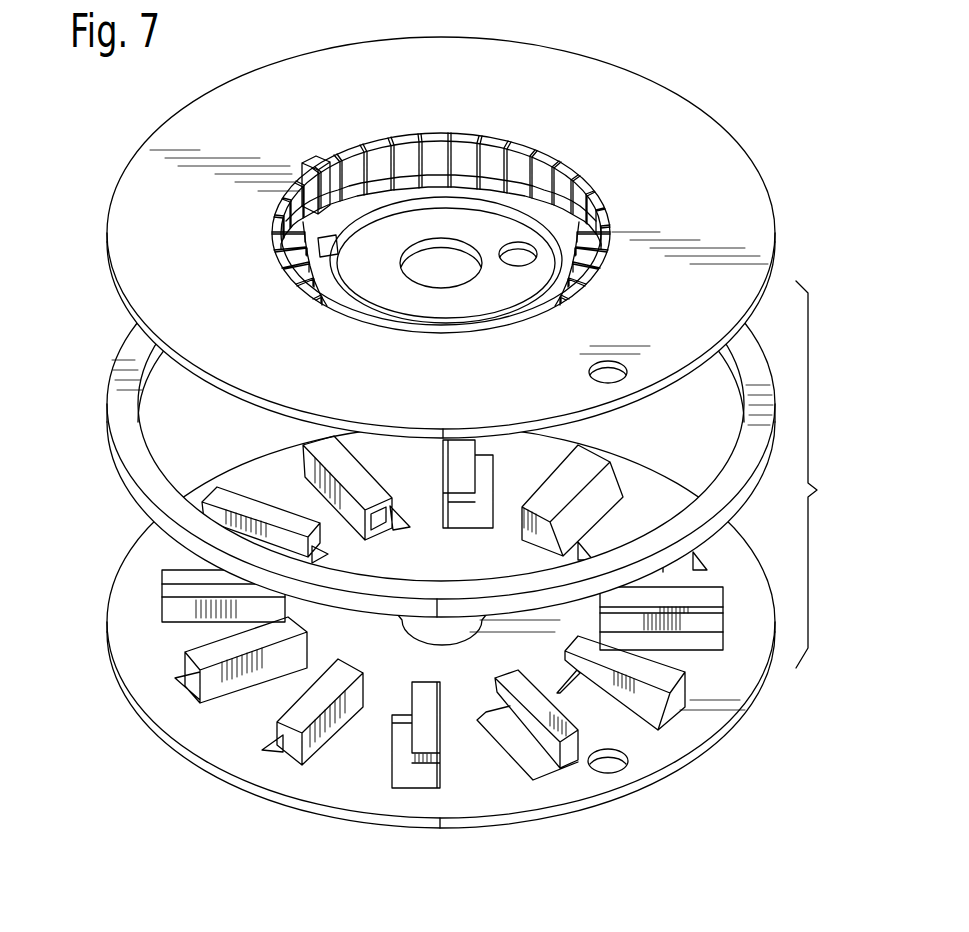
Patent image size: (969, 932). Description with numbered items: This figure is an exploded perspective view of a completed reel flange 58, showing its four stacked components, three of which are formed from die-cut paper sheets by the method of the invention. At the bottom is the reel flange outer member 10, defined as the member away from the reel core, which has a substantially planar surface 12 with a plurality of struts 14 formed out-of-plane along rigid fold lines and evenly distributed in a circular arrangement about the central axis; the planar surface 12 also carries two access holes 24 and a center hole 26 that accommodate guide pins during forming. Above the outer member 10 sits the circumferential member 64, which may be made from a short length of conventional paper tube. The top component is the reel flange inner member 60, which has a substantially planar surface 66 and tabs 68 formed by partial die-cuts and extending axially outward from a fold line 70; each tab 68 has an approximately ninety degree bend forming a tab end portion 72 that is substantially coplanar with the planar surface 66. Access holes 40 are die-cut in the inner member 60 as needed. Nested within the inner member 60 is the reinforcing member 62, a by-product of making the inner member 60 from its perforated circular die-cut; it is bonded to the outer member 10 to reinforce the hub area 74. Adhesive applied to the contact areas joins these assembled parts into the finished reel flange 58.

The reel flange outer member 10 is at (128, 693).
The planar surface 12 is at (513, 798).
The strut 14 is at (212, 690).
The access hole 24 is at (623, 767).
The center hole 26 is at (420, 633).
The access hole 40 is at (540, 254).
The reel flange 58 is at (820, 474).
The reel flange inner member 60 is at (110, 257).
The reinforcing member 62 is at (500, 227).
The circumferential member 64 is at (126, 474).
The planar surface 66 is at (700, 300).
The tab 68 is at (383, 167).
The fold line 70 is at (573, 177).
The tab end portion 72 is at (513, 180).
The hub area 74 is at (462, 564).